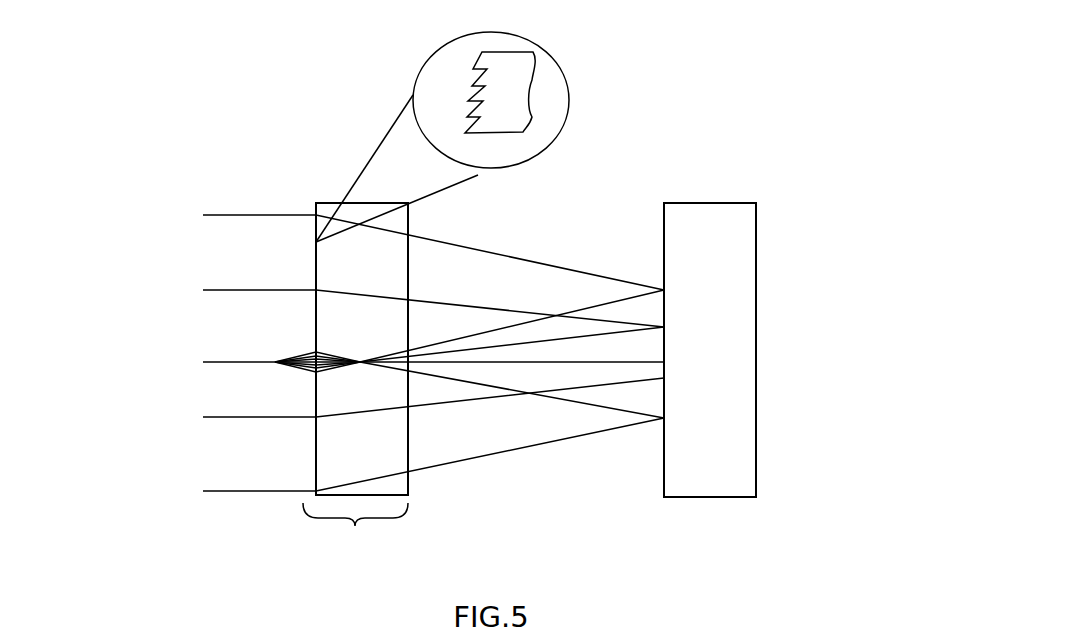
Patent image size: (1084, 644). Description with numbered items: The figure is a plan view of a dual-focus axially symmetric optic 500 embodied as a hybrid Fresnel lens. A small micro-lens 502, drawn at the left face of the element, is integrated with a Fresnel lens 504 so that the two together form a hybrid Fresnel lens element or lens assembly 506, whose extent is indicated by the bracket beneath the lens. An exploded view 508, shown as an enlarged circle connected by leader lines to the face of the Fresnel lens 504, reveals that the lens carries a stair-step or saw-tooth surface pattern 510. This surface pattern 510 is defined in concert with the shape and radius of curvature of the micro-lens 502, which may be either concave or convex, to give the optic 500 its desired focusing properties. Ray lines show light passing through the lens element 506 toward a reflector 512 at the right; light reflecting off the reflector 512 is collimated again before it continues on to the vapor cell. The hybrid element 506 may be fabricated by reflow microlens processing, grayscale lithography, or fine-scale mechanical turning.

The dual-focus axially symmetric optic 500 is at (806, 146).
The micro-lens 502 is at (312, 352).
The Fresnel lens 504 is at (335, 460).
The hybrid Fresnel lens element 506 is at (355, 534).
The exploded view 508 is at (423, 98).
The surface pattern 510 is at (482, 86).
The reflector 512 is at (690, 373).